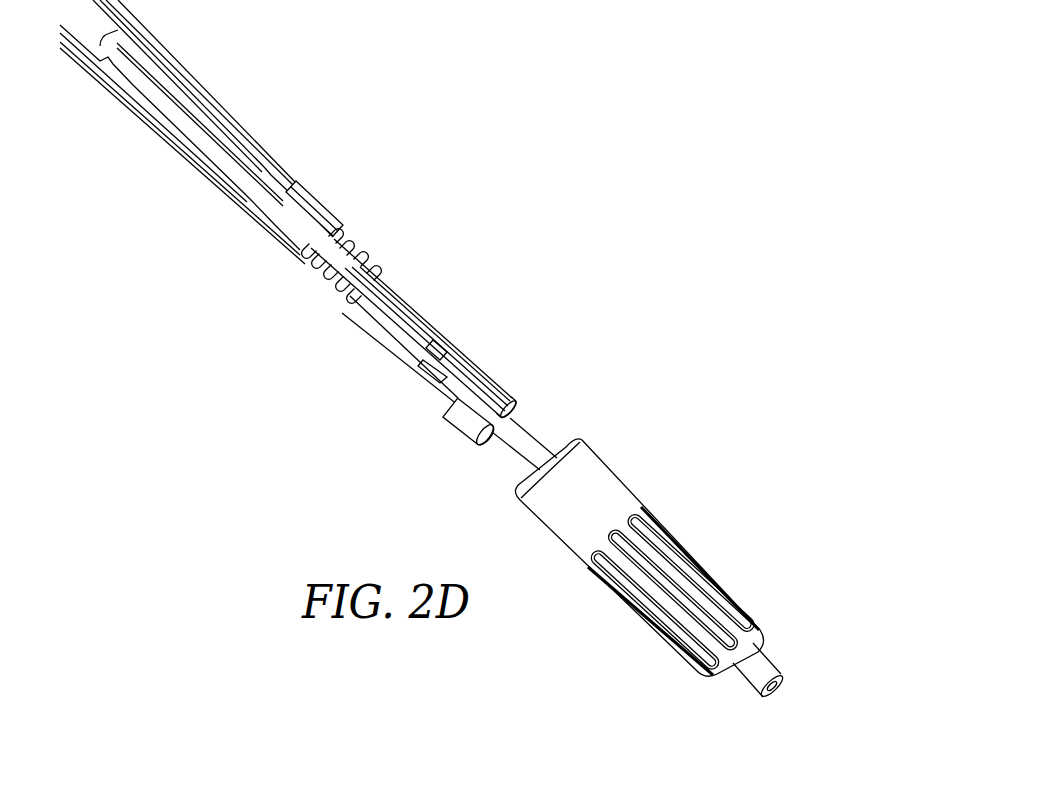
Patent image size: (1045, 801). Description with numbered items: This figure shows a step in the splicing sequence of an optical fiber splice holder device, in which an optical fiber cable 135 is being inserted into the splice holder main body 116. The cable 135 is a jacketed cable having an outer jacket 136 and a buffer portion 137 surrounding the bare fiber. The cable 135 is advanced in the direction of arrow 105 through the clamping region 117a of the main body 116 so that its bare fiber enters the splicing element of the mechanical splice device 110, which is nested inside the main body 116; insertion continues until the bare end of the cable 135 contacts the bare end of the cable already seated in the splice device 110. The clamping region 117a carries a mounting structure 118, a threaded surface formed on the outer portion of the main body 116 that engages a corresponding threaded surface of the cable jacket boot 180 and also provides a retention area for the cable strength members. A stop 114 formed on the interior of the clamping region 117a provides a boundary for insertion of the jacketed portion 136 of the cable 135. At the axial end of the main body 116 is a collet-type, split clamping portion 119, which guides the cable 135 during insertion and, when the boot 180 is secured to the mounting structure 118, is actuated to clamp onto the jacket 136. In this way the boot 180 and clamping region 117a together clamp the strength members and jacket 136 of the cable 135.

The splice device 110 is at (190, 103).
The splice holder main body 116 is at (300, 183).
The mounting structure 118 is at (367, 240).
The buffer portion 137 is at (388, 313).
The clamping portion 119 is at (520, 407).
The stop 114 is at (440, 343).
The clamping region 117a is at (368, 352).
The arrow 105 is at (428, 438).
The outer jacket 136 is at (533, 443).
The cable jacket boot 180 is at (620, 483).
The optical fiber cable 135 is at (747, 673).